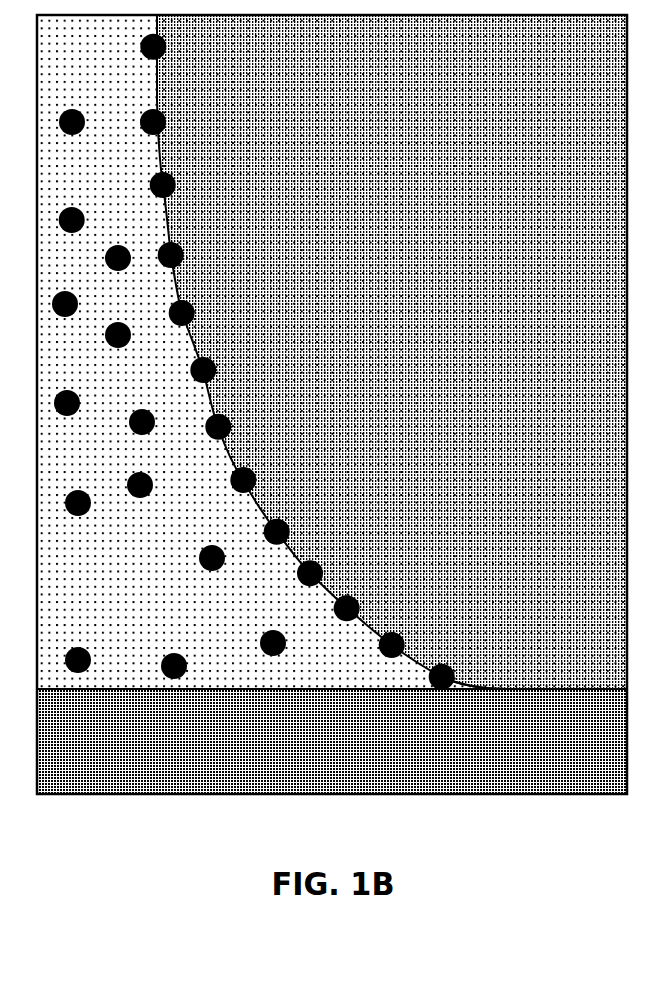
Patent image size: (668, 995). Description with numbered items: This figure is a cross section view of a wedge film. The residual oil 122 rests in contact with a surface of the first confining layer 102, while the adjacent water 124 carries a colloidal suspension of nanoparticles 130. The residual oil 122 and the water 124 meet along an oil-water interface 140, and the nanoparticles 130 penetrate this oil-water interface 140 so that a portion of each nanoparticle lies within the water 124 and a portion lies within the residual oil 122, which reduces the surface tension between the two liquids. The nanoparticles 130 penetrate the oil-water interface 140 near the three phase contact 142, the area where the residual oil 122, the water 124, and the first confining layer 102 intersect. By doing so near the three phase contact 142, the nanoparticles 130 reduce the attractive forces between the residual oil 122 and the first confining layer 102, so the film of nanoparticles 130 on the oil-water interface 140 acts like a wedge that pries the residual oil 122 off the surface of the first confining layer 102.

The first confining layer 102 is at (377, 747).
The residual oil 122 is at (450, 322).
The water 124 is at (130, 596).
The nanoparticles 130 is at (74, 118).
The oil-water interface 140 is at (158, 89).
The three phase contact 142 is at (507, 688).